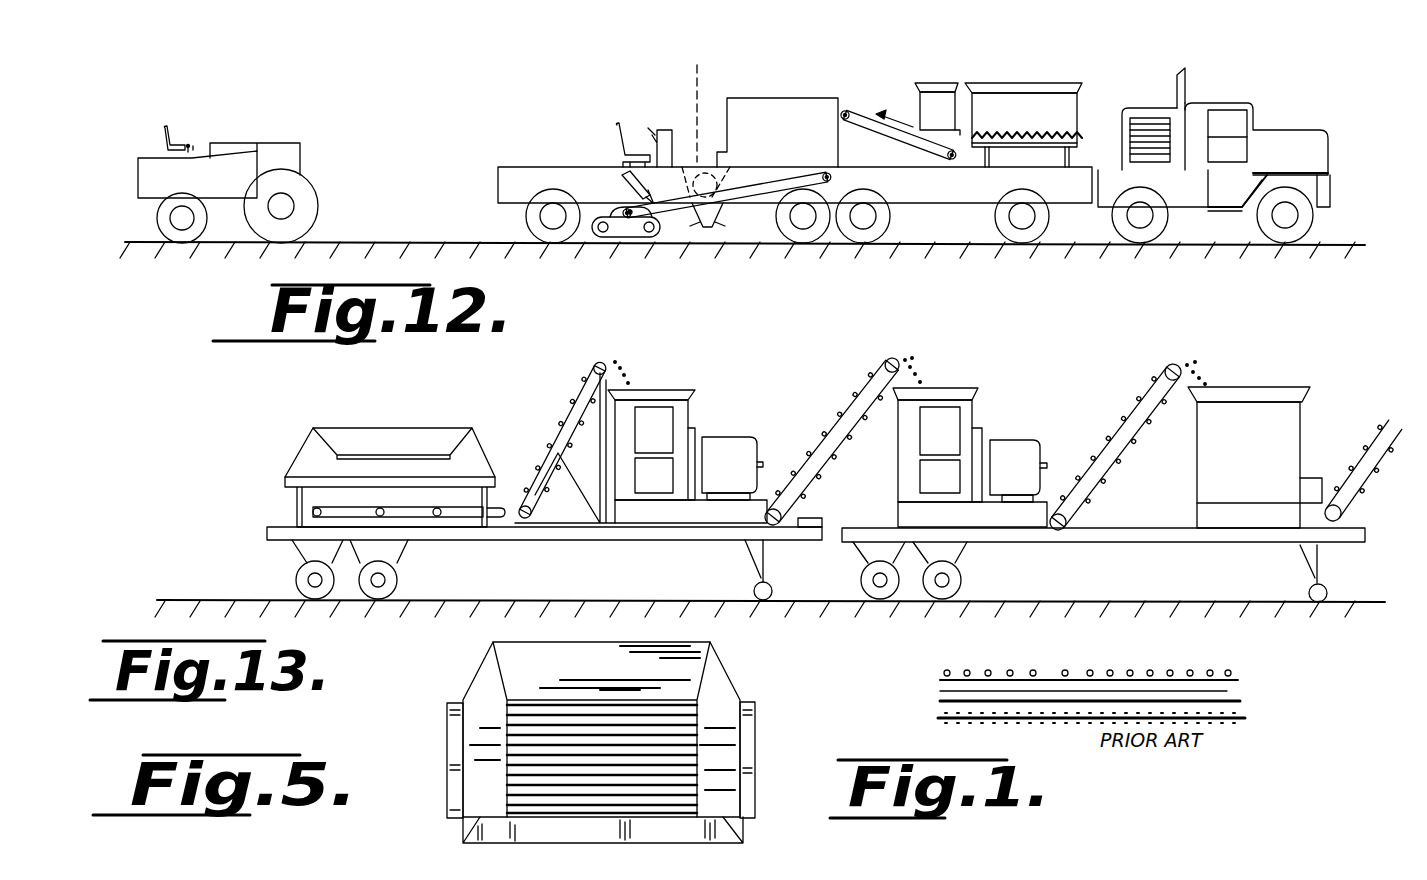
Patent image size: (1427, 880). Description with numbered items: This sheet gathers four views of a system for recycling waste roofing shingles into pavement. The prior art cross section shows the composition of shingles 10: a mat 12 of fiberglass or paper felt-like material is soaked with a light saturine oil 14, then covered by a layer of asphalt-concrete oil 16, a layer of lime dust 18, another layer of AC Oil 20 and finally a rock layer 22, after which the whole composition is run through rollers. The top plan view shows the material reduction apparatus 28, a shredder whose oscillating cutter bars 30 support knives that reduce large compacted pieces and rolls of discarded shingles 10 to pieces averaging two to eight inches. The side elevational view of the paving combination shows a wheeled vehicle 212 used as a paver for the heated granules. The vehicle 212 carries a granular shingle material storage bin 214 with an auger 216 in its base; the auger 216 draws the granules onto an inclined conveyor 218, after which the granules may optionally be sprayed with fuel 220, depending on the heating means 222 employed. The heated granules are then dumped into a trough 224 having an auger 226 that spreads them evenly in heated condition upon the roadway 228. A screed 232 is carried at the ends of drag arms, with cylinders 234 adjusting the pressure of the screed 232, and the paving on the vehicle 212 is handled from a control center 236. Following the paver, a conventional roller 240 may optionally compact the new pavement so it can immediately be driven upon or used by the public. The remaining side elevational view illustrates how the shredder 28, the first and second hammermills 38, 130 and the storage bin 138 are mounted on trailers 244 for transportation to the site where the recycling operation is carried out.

In FIG. 12, the roller 240 is at (285, 144).
In FIG. 12, the wheeled vehicle 212 is at (976, 74).
In FIG. 12, the granular shingle material storage bin 214 is at (1060, 83).
In FIG. 12, the auger 216 is at (1022, 130).
In FIG. 12, the inclined conveyor 218 is at (870, 113).
In FIG. 12, the fuel 220 is at (937, 83).
In FIG. 12, the heating means 222 is at (788, 113).
In FIG. 12, the trough 224 is at (704, 221).
In FIG. 12, the auger 226 is at (703, 136).
In FIG. 12, the roadway 228 is at (1320, 244).
In FIG. 12, the screed 232 is at (612, 214).
In FIG. 12, the cylinders 234 is at (622, 178).
In FIG. 12, the control center 236 is at (657, 127).
In FIG. 13, the material reduction apparatus 28 is at (335, 437).
In FIG. 5, the material reduction apparatus 28 is at (748, 695).
In FIG. 5, the oscillating cutter bars 30 is at (533, 733).
In FIG. 13, the first hammermill 38 is at (668, 390).
In FIG. 13, the second hammermill 130 is at (948, 388).
In FIG. 13, the storage bin 138 is at (1252, 387).
In FIG. 13, the trailers 244 is at (267, 531).
In FIG. 1, the shingles 10 is at (928, 695).
In FIG. 1, the mat 12 is at (1245, 718).
In FIG. 1, the light saturine oil 14 is at (1233, 713).
In FIG. 1, the layer of asphalt-concrete oil 16 is at (1243, 700).
In FIG. 1, the layer of lime dust 18 is at (1233, 692).
In FIG. 1, the layer of AC Oil 20 is at (1140, 685).
In FIG. 1, the rock layer 22 is at (1067, 672).